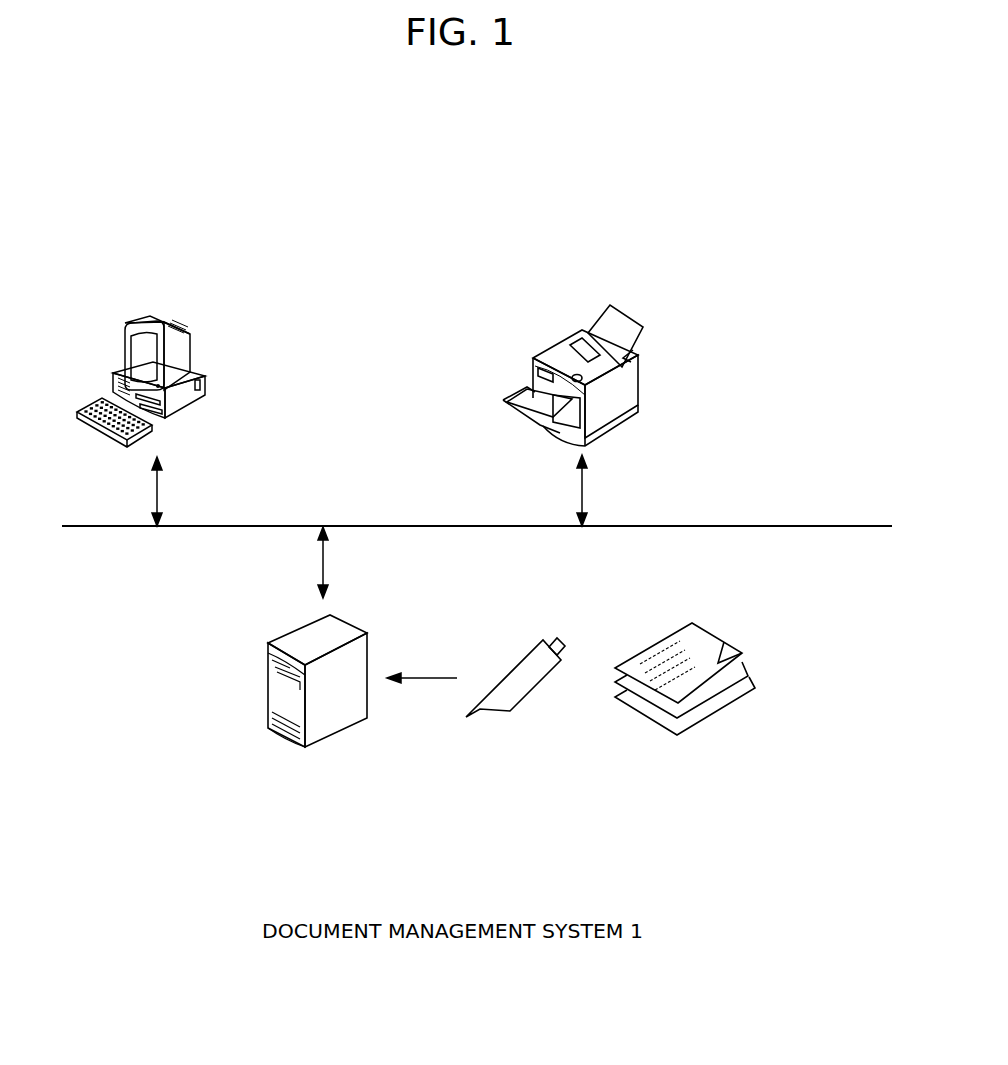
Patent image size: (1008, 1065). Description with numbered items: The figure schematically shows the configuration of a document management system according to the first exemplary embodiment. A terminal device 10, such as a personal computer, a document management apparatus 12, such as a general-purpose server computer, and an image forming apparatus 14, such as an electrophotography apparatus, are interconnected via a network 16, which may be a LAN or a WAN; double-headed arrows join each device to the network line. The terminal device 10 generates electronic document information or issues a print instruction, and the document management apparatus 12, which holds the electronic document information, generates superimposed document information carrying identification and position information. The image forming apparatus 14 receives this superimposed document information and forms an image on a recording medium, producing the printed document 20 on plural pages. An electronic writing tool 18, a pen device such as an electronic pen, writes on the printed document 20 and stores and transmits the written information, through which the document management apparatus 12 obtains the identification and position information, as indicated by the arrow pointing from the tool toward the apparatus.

The terminal device 10 is at (172, 330).
The document management apparatus 12 is at (333, 736).
The image forming apparatus 14 is at (578, 330).
The network 16 is at (780, 527).
The electronic writing tool 18 is at (520, 701).
The printed document 20 is at (712, 711).